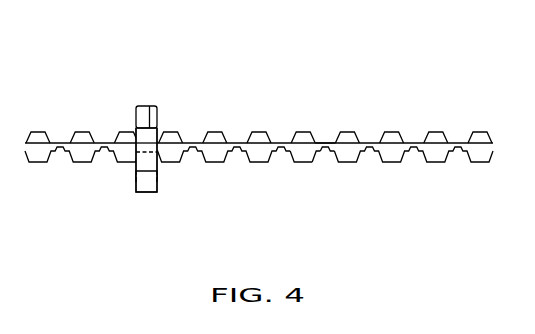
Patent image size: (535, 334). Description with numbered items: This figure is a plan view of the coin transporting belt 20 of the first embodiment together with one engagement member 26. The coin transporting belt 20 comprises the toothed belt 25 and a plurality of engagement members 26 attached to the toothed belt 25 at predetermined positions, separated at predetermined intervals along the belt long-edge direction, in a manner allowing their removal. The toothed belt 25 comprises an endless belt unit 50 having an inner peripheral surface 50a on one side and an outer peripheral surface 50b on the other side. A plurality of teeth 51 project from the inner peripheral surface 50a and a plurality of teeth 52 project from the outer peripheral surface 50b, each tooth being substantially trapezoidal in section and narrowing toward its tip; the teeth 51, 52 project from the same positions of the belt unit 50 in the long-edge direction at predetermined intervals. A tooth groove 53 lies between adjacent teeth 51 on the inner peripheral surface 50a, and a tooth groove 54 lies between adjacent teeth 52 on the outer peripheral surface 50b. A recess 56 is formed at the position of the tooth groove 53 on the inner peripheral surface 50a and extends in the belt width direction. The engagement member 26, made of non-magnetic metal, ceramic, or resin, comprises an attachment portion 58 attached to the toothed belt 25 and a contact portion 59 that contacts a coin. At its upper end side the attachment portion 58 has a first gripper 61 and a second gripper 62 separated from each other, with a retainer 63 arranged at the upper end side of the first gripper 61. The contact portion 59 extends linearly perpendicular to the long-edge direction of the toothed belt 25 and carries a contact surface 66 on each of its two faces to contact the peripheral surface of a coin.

The coin transporting belt 20 is at (259, 119).
The toothed belt 25 is at (259, 147).
The engagement member 26 is at (146, 140).
The belt unit 50 is at (259, 119).
The inner peripheral surface 50a is at (259, 174).
The outer peripheral surface 50b is at (243, 142).
The tooth 51 is at (298, 163).
The tooth 52 is at (302, 131).
The tooth groove 53 is at (317, 158).
The tooth groove 54 is at (326, 140).
The recess 56 is at (327, 152).
The attachment portion 58 is at (137, 125).
The contact portion 59 is at (158, 189).
The first gripper 61 is at (146, 176).
The second gripper 62 is at (150, 107).
The retainer 63 is at (148, 148).
The contact surface 66 is at (136, 178).